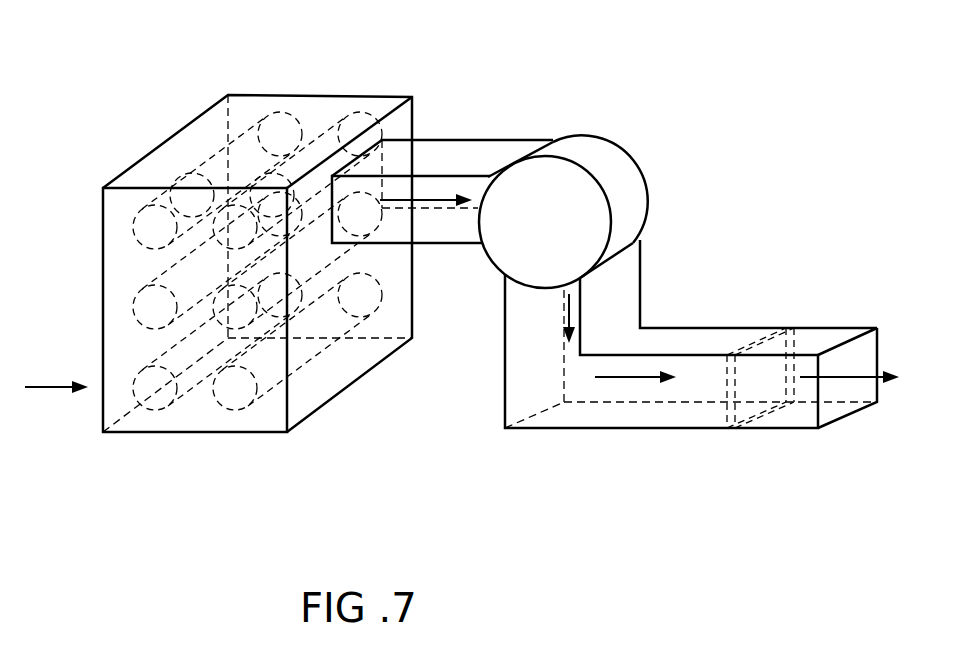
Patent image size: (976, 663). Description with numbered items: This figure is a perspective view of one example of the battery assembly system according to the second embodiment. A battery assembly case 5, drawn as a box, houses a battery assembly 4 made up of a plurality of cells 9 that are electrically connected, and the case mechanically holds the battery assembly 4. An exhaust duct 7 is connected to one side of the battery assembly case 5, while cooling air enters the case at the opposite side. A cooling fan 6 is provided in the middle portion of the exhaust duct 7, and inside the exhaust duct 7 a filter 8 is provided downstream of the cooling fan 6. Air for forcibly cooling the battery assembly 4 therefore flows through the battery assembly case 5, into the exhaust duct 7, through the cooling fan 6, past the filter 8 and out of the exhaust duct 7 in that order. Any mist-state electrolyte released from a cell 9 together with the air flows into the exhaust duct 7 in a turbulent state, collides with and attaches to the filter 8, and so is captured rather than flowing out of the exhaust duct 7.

The battery assembly 4 is at (243, 158).
The battery assembly case 5 is at (415, 99).
The cooling fan 6 is at (604, 160).
The exhaust duct 7 is at (660, 338).
The filter 8 is at (788, 328).
The cell 9 is at (197, 205).